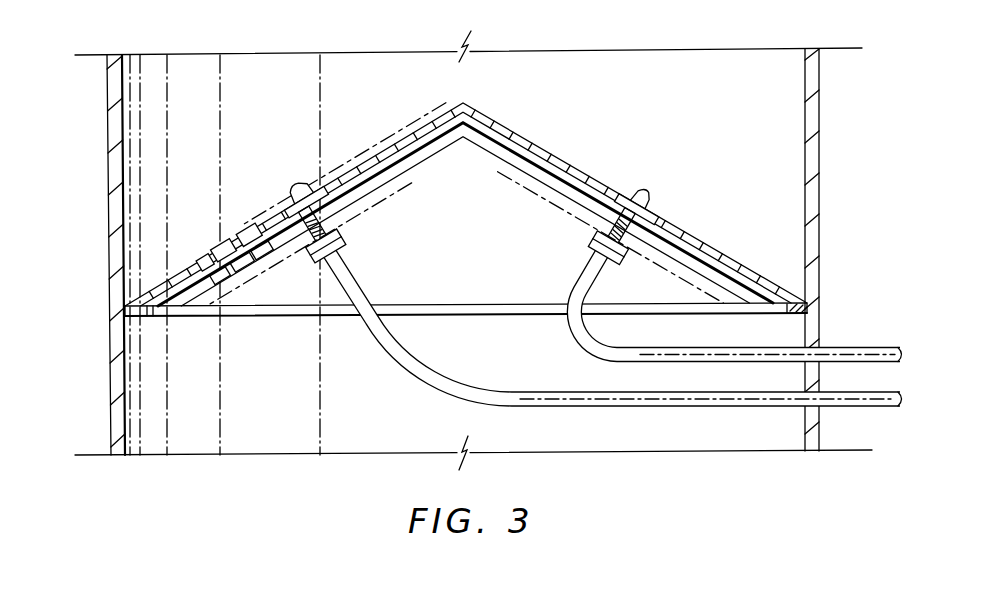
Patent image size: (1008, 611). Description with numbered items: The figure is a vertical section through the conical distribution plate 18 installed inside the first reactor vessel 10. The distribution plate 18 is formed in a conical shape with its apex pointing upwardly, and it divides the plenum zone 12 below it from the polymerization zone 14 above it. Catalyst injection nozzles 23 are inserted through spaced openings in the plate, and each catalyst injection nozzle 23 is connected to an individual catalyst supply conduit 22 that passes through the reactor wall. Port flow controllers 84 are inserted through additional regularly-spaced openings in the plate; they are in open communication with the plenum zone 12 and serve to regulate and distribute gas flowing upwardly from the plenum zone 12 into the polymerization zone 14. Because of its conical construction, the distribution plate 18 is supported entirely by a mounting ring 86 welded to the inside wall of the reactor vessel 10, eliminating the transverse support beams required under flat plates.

The first reactor vessel 10 is at (820, 109).
The plenum zone 12 is at (573, 440).
The polymerization zone 14 is at (577, 95).
The conical distribution plate 18 is at (548, 153).
The catalyst supply conduit 22 is at (851, 392).
The catalyst injection nozzle 23 is at (304, 182).
The port flow controller 84 is at (198, 251).
The mounting ring 86 is at (795, 314).